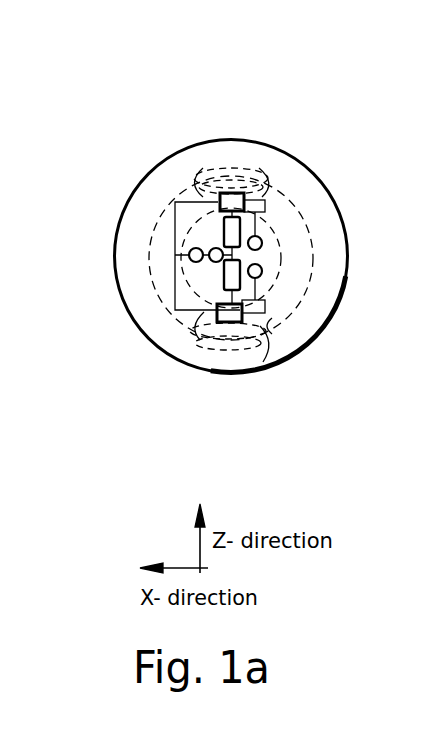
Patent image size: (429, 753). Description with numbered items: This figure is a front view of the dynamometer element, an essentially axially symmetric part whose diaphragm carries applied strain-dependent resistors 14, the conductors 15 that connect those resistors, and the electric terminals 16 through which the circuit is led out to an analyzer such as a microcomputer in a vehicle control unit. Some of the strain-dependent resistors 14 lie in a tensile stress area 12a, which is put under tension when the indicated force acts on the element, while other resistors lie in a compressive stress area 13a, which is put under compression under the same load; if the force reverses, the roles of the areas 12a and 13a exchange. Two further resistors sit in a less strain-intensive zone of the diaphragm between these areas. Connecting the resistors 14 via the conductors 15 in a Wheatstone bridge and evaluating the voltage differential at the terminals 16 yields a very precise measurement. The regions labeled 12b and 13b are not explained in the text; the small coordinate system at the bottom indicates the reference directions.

The tensile stress area 12a is at (185, 185).
The second pole piece of magnet 12b is at (210, 172).
The compressive stress area 13a is at (277, 325).
The second pole piece of lower magnet 13b is at (276, 352).
The strain-dependent resistors 14 is at (233, 198).
The conductors 15 is at (264, 198).
The electric terminals 16 is at (260, 240).